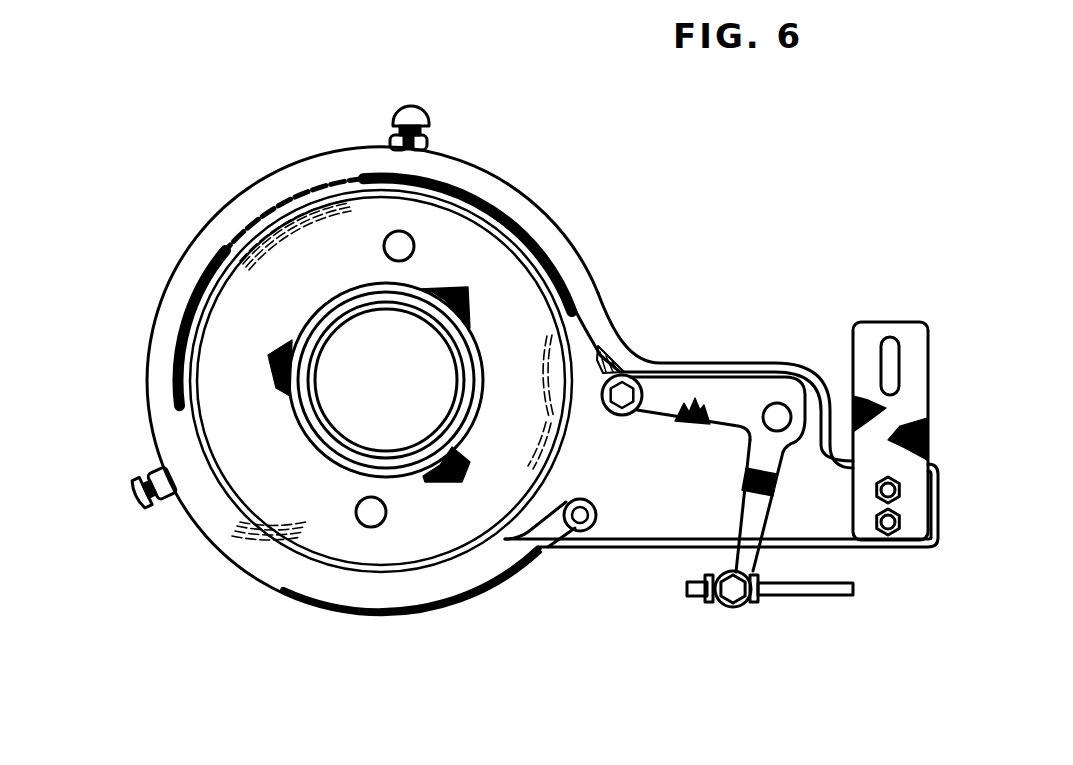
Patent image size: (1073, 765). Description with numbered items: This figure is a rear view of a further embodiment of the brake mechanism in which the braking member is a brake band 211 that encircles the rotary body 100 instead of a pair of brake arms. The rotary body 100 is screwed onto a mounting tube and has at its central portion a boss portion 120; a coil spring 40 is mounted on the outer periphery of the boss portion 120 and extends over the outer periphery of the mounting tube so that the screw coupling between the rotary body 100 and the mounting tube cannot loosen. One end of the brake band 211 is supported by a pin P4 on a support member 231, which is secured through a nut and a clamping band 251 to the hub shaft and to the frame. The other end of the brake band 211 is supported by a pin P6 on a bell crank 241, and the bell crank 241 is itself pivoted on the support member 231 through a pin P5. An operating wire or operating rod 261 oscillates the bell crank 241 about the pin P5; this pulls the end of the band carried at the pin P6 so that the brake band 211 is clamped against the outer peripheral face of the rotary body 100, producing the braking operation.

The coil spring 40 is at (418, 298).
The boss portion 120 is at (437, 318).
The rotary body 100 is at (512, 295).
The brake band 211 is at (598, 348).
The support member 231 is at (742, 363).
The bell crank 241 is at (743, 402).
The clamping band 251 is at (920, 385).
The operating rod 261 is at (805, 592).
The pin P4 is at (580, 522).
The pin P5 is at (777, 415).
The pin P6 is at (628, 390).